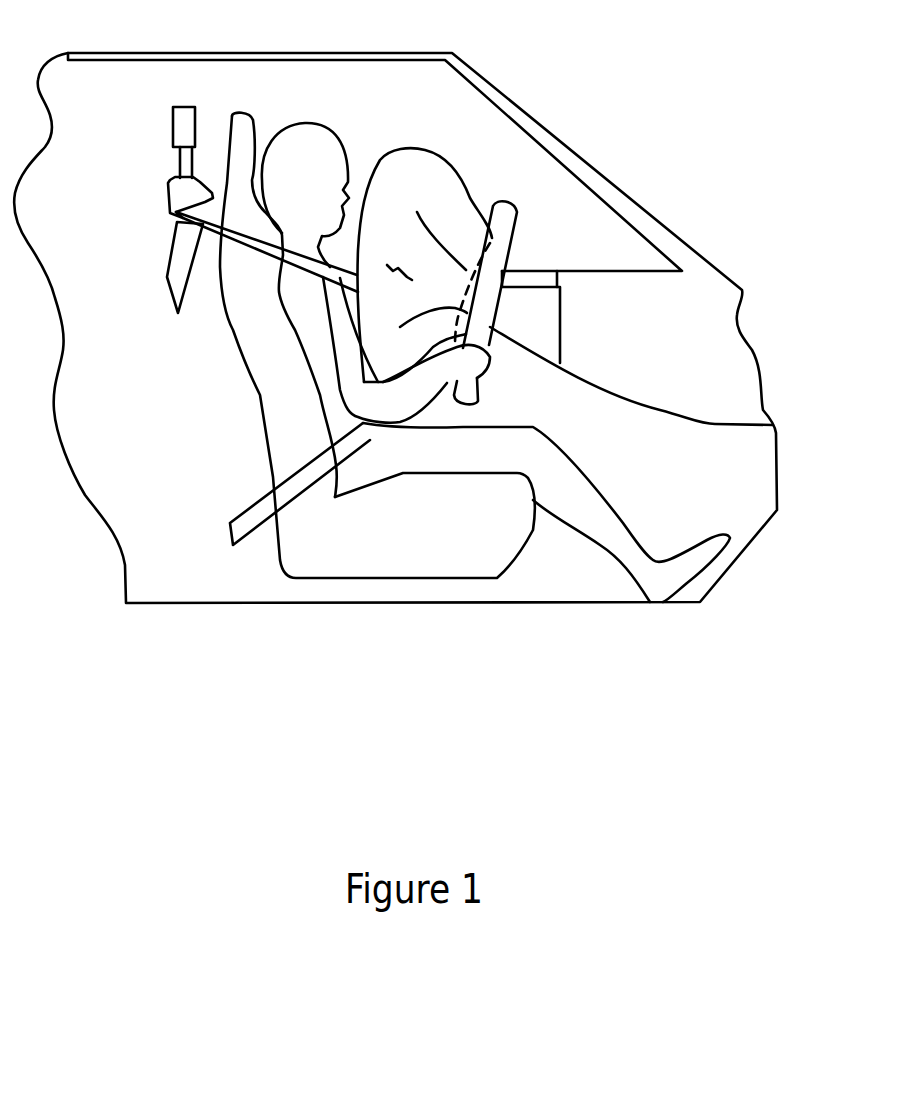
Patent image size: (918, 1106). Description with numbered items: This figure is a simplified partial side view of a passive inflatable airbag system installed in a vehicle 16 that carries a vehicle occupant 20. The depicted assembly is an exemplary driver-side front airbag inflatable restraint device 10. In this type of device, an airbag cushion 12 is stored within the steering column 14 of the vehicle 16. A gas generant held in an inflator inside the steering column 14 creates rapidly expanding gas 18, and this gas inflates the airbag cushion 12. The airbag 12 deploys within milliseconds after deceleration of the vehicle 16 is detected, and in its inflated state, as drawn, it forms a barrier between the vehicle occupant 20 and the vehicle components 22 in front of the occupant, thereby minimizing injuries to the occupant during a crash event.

The driver-side front airbag inflatable restraint device 10 is at (493, 206).
The airbag cushion 12 is at (420, 147).
The steering column 14 is at (523, 283).
The vehicle 16 is at (703, 258).
The rapidly expanding gas 18 is at (448, 208).
The vehicle occupant 20 is at (390, 455).
The vehicle components 22 is at (510, 313).